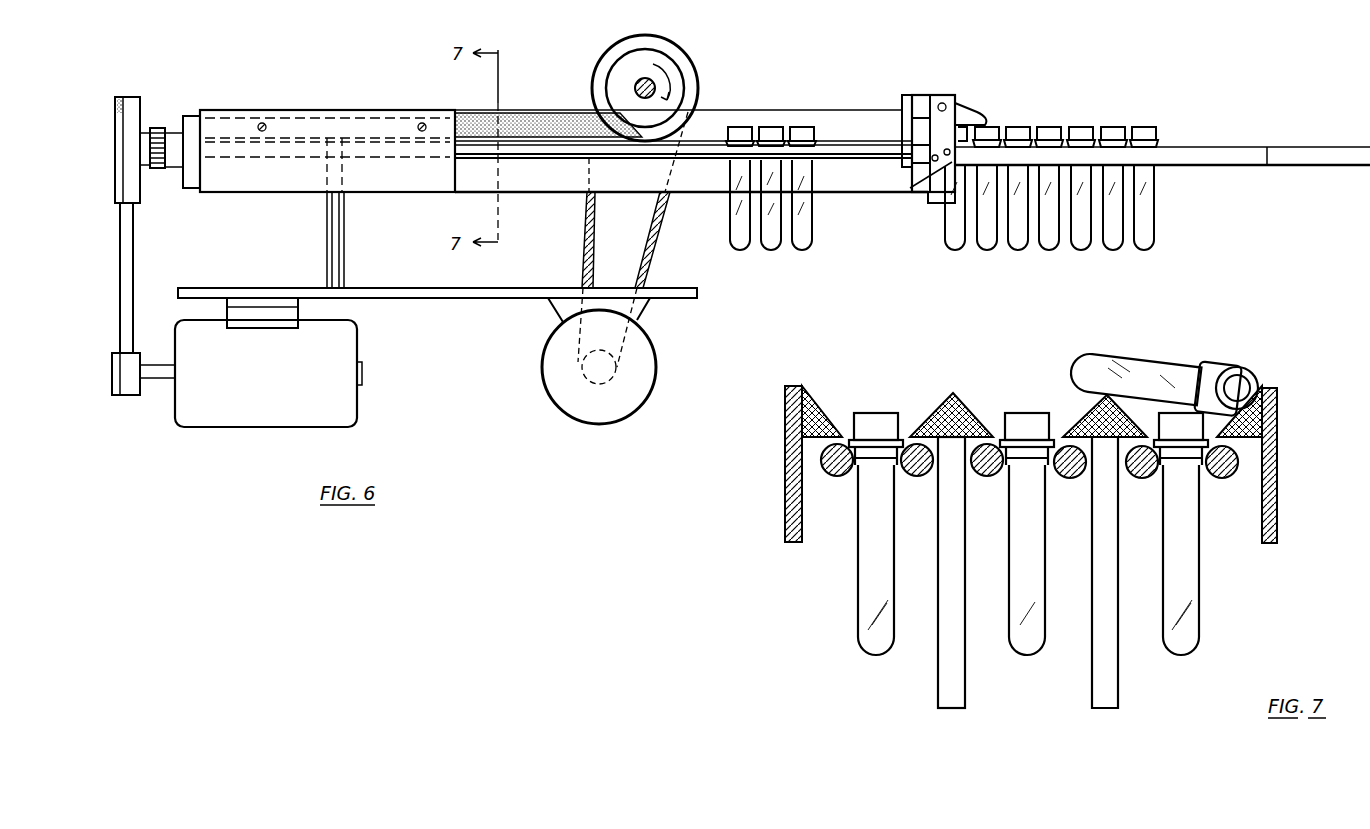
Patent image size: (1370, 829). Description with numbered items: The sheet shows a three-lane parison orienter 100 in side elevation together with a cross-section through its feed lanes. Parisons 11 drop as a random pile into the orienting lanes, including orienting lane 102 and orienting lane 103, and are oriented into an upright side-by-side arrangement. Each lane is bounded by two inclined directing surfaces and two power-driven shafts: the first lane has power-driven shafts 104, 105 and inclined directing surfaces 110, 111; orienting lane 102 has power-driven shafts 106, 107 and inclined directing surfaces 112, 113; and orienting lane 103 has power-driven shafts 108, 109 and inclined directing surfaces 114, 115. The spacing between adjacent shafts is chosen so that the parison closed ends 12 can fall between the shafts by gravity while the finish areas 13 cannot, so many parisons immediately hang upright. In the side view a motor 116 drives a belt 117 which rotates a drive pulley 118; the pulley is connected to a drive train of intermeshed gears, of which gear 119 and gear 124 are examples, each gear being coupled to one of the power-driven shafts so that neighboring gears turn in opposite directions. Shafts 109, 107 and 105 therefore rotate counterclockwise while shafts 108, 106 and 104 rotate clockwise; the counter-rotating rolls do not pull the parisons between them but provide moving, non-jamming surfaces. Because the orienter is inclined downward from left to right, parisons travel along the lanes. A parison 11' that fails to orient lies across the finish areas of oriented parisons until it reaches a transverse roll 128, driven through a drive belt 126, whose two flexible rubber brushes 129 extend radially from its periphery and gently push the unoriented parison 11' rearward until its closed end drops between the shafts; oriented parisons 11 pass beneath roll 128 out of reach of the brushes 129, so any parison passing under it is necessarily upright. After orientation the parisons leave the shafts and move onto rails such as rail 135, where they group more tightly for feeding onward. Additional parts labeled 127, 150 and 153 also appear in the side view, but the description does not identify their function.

In FIG. 6, the parisons 11 is at (942, 163).
In FIG. 7, the parisons 11 is at (1025, 534).
In FIG. 7, the unoriented parisons 11' is at (1163, 366).
In FIG. 7, the parison closed ends 12 is at (878, 652).
In FIG. 7, the finish areas 13 is at (888, 452).
In FIG. 6, the orienter 100 is at (772, 82).
In FIG. 7, the orienting lane 102 is at (1027, 410).
In FIG. 7, the orienting lane 103 is at (875, 410).
In FIG. 7, the power-driven shaft 104 is at (1224, 478).
In FIG. 7, the power-driven shaft 105 is at (1142, 478).
In FIG. 7, the power-driven shaft 106 is at (1070, 478).
In FIG. 7, the power-driven shaft 107 is at (987, 476).
In FIG. 7, the power-driven shaft 108 is at (918, 476).
In FIG. 7, the power-driven shaft 109 is at (836, 476).
In FIG. 7, the inclined directing surface 110 is at (1233, 425).
In FIG. 7, the inclined directing surface 111 is at (1135, 378).
In FIG. 7, the inclined directing surface 112 is at (1085, 410).
In FIG. 7, the inclined directing surface 113 is at (966, 408).
In FIG. 7, the inclined directing surface 114 is at (940, 410).
In FIG. 6, the inclined directing surface 115 is at (540, 125).
In FIG. 7, the inclined directing surface 115 is at (812, 403).
In FIG. 6, the motor 116 is at (277, 385).
In FIG. 6, the belt 117 is at (130, 240).
In FIG. 6, the drive pulley 118 is at (138, 103).
In FIG. 6, the gear 119 is at (162, 128).
In FIG. 6, the gear 124 is at (648, 380).
In FIG. 6, the drive belt 126 is at (653, 242).
In FIG. 6, the drive wheel 127 is at (645, 36).
In FIG. 6, the transverse roll 128 is at (666, 70).
In FIG. 6, the flexible rubber brushes 129 is at (619, 63).
In FIG. 6, the rail 135 is at (1245, 147).
In FIG. 6, the finger 150 is at (972, 112).
In FIG. 6, the bracket 153 is at (942, 103).